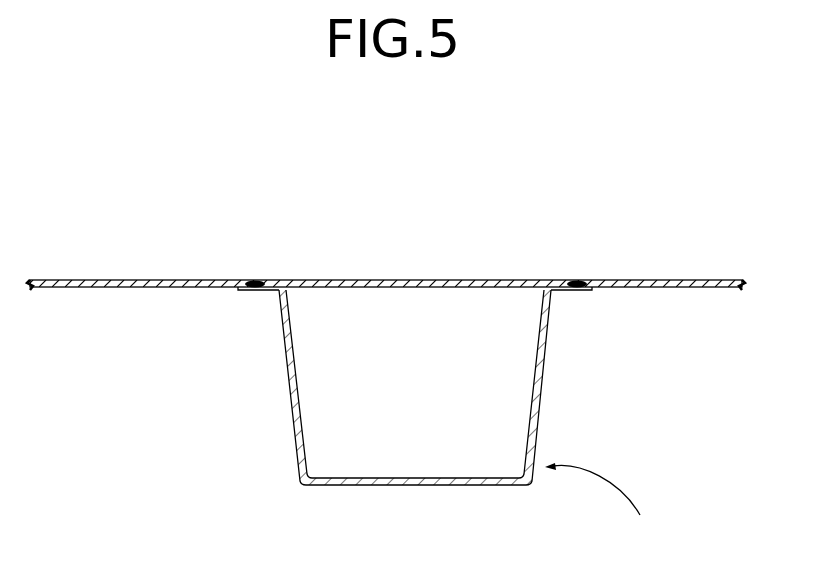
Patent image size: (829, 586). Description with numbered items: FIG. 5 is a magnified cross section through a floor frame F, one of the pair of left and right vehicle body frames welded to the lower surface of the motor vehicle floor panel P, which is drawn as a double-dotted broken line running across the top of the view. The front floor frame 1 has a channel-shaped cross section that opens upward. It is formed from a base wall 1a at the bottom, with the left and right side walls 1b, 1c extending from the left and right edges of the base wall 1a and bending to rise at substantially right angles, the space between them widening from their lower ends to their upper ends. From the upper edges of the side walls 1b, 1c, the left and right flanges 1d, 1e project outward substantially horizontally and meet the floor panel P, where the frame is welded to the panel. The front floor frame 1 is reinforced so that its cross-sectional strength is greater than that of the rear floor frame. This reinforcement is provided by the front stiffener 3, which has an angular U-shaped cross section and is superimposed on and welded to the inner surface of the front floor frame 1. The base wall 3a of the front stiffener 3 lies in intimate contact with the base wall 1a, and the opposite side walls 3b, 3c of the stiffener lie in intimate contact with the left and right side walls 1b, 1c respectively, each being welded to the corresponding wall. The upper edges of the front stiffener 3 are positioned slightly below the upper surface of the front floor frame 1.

The floor panel P is at (671, 282).
The front floor frame 1 is at (403, 379).
The base wall 1a is at (438, 487).
The left side wall 1b is at (297, 414).
The right side wall 1c is at (536, 425).
The left flange 1d is at (247, 292).
The right flange 1e is at (594, 284).
The front stiffener 3 is at (407, 384).
The base wall of front stiffener 3a is at (379, 478).
The side wall of front stiffener 3b is at (270, 423).
The side wall of front stiffener 3c is at (534, 395).
The floor frame F is at (602, 508).